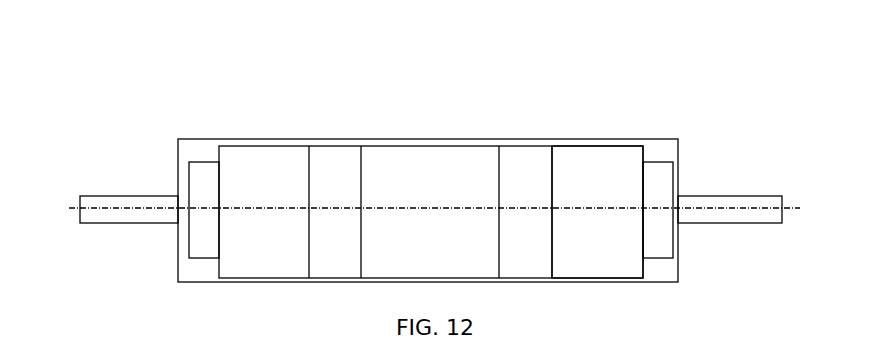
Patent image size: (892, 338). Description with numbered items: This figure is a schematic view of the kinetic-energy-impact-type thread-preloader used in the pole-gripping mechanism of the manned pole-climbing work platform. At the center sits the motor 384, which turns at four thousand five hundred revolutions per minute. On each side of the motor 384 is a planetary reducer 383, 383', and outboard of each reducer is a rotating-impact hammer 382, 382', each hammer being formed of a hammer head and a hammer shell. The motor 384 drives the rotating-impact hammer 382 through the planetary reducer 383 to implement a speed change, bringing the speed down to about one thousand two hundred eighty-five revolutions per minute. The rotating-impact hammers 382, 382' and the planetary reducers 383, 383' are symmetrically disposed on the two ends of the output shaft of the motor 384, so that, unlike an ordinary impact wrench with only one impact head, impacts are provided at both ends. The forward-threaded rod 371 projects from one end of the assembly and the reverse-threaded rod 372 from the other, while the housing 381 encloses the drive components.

The forward-threaded rod 371 is at (708, 203).
The reverse-threaded rod 372 is at (149, 202).
The housing / core body 381 is at (482, 140).
The rotating-impact hammer 382 is at (280, 171).
The planetary reducer 383 is at (353, 174).
The motor 384 is at (423, 153).
The planetary reducer 383' is at (538, 173).
The rotating-impact hammer 382' is at (597, 170).